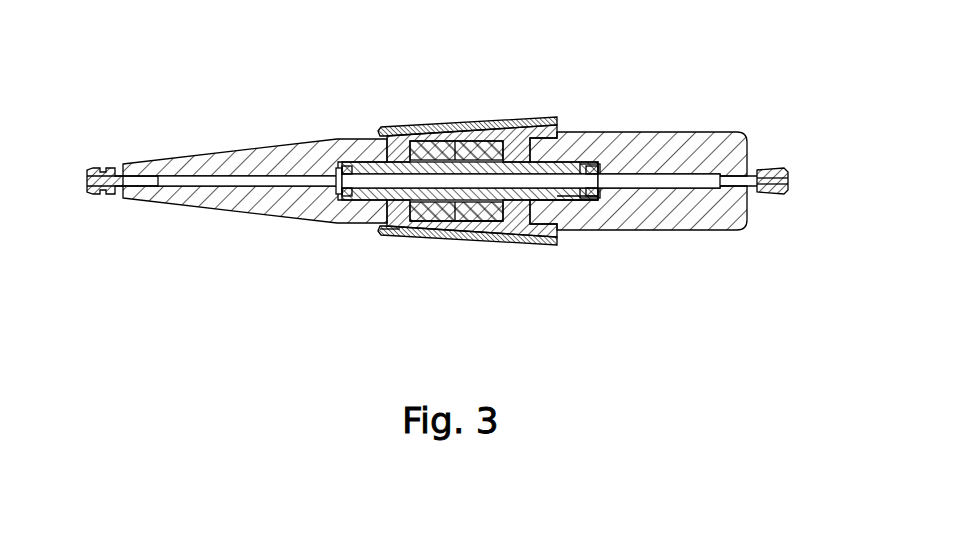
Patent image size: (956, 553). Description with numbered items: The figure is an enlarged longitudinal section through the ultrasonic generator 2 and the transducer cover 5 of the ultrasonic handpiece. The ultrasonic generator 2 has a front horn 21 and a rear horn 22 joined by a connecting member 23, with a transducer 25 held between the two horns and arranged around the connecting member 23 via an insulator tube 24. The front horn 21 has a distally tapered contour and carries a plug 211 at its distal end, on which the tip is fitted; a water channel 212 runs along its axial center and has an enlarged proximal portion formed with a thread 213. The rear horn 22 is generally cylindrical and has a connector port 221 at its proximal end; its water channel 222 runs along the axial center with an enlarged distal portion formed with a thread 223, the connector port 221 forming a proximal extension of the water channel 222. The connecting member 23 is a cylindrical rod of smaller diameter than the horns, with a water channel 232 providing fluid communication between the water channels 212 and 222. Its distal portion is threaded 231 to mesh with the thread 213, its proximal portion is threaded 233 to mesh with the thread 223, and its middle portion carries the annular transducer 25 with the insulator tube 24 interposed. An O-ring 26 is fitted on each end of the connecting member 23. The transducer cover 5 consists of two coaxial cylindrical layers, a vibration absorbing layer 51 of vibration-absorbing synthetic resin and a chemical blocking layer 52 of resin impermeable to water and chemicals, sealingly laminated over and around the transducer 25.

The ultrasonic generator 2 is at (421, 101).
The transducer cover 5 is at (482, 132).
The front horn 21 is at (300, 162).
The plug 211 is at (95, 168).
The water channel 212 is at (248, 177).
The thread 213 is at (385, 205).
The rear horn 22 is at (583, 150).
The connector port 221 is at (779, 163).
The water channel 222 is at (650, 182).
The thread 223 is at (545, 200).
The connecting member 23 is at (452, 190).
The distal thread 231 is at (392, 228).
The water channel 232 is at (508, 215).
The proximal thread 233 is at (568, 197).
The insulator tube 24 is at (497, 165).
The transducer 25 is at (478, 142).
The O-ring 26 is at (350, 166).
The vibration absorbing layer 51 is at (532, 124).
The chemical blocking layer 52 is at (457, 117).